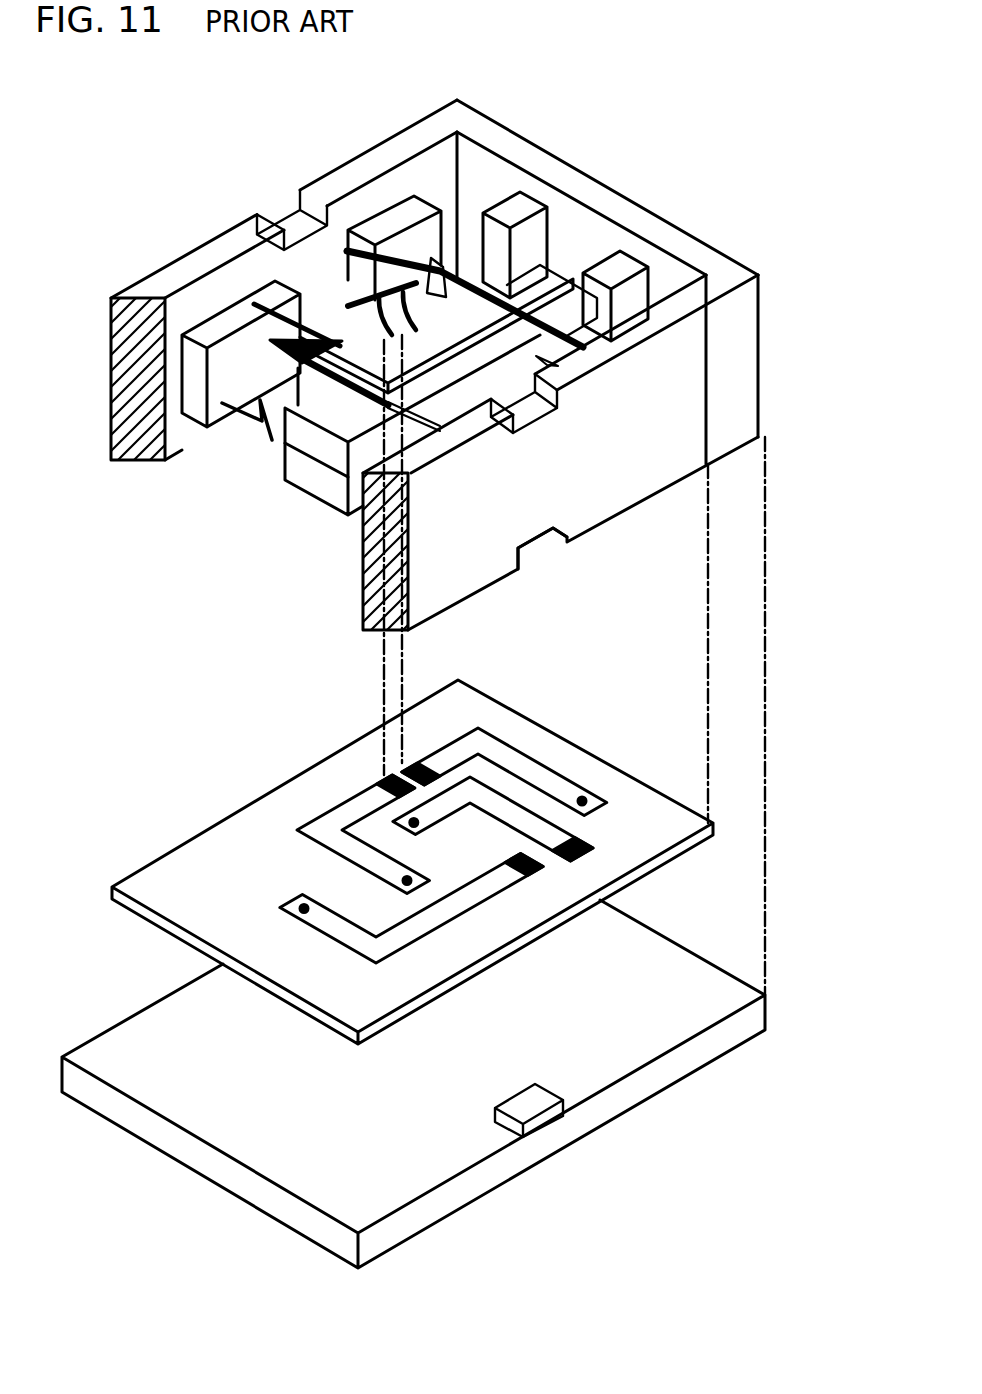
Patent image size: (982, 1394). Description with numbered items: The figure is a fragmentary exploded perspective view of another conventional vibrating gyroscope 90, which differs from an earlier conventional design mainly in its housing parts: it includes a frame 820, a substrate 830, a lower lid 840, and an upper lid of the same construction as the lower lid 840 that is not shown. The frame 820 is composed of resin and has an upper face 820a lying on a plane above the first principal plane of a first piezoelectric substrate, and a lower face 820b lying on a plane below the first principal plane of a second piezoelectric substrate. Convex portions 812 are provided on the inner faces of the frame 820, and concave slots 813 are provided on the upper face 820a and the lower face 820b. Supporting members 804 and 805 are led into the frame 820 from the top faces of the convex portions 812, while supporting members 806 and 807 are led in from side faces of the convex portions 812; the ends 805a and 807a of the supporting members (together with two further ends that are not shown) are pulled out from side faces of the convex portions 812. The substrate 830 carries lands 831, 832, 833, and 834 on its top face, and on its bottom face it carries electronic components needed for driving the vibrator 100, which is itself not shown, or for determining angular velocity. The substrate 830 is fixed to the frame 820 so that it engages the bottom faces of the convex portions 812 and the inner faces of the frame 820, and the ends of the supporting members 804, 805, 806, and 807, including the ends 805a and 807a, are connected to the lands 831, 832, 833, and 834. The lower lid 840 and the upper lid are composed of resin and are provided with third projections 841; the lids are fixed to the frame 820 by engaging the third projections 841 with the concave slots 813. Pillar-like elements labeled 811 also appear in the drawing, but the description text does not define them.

The vibrating gyroscope 90 is at (138, 127).
The vibrator 100 is at (317, 480).
The supporting member 804 is at (273, 312).
The supporting member 805 is at (460, 282).
The end of supporting member 805a is at (380, 300).
The supporting member 806 is at (263, 407).
The supporting member 807 is at (400, 292).
The end of supporting member 807a is at (352, 300).
The pillar 811 is at (527, 203).
The convex portion 812 is at (420, 213).
The concave slot 813 is at (292, 224).
The frame 820 is at (163, 283).
The upper face 820a is at (722, 268).
The lower face 820b is at (767, 447).
The substrate 830 is at (197, 857).
The land 831 is at (333, 923).
The land 832 is at (507, 760).
The land 833 is at (537, 827).
The land 834 is at (352, 813).
The lower lid 840 is at (108, 1047).
The third projection 841 is at (535, 1093).